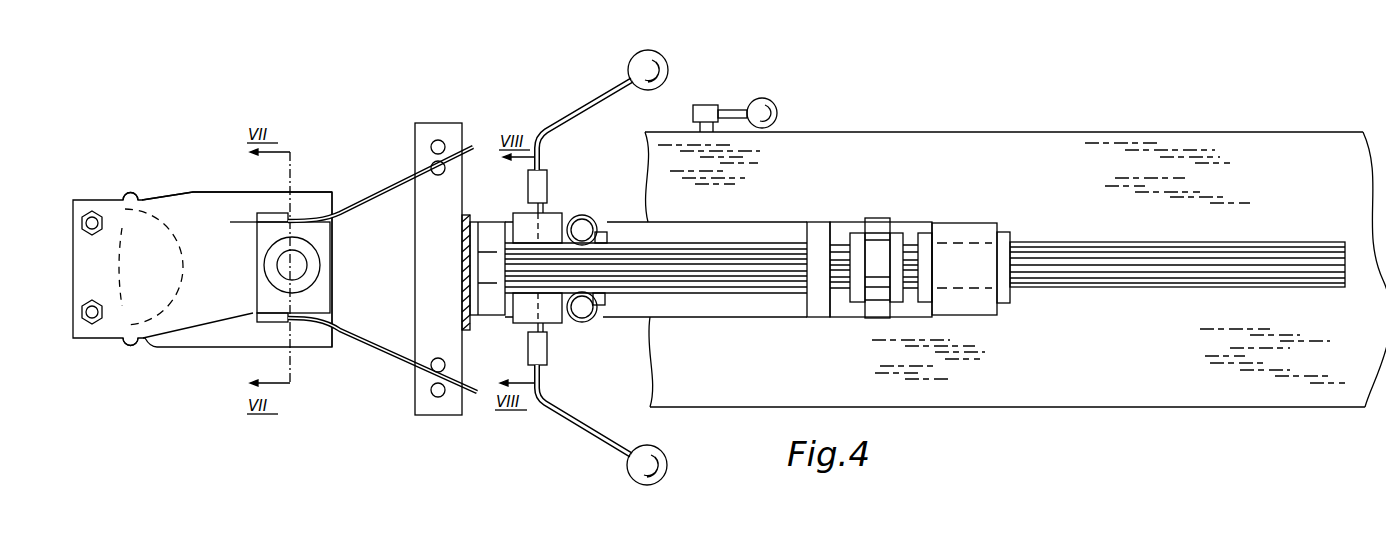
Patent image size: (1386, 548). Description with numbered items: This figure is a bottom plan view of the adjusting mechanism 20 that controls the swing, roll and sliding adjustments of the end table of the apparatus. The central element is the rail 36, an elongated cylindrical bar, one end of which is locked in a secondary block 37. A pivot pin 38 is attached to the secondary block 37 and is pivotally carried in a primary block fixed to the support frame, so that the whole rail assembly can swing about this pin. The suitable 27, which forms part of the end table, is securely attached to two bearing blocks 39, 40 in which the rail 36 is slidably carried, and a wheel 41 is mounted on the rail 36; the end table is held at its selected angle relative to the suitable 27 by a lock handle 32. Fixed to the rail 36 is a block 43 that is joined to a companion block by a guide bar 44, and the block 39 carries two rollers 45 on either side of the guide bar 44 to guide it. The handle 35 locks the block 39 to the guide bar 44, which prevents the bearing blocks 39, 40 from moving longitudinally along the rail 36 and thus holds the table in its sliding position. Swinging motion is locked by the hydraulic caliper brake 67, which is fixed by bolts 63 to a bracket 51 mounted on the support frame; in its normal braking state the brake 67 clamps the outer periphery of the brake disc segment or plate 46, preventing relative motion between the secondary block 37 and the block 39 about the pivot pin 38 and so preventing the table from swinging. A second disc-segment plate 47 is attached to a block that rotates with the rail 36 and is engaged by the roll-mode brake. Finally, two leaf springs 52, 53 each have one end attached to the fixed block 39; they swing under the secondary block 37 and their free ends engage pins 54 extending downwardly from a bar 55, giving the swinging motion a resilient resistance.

The adjusting mechanism 20 is at (745, 211).
The suitable 27 is at (838, 130).
The lock handle 32 is at (763, 98).
The handle 35 is at (613, 90).
The rail 36 is at (1097, 243).
The secondary block 37 is at (340, 300).
The pivot pin 38 is at (283, 270).
The bearing block 39 is at (578, 214).
The bearing block 40 is at (957, 225).
The wheel 41 is at (876, 218).
The block 43 is at (818, 302).
The guide bar 44 is at (736, 282).
The rollers 45 is at (592, 228).
The brake disc segment or plate 46 is at (213, 342).
The disc-segment plate 47 is at (411, 277).
The bracket 51 is at (182, 211).
The leaf spring 52 is at (368, 199).
The leaf spring 53 is at (382, 348).
The pins 54 is at (435, 162).
The bar 55 is at (425, 405).
The bolts 63 is at (92, 210).
The hydraulic caliper brake 67 is at (151, 188).